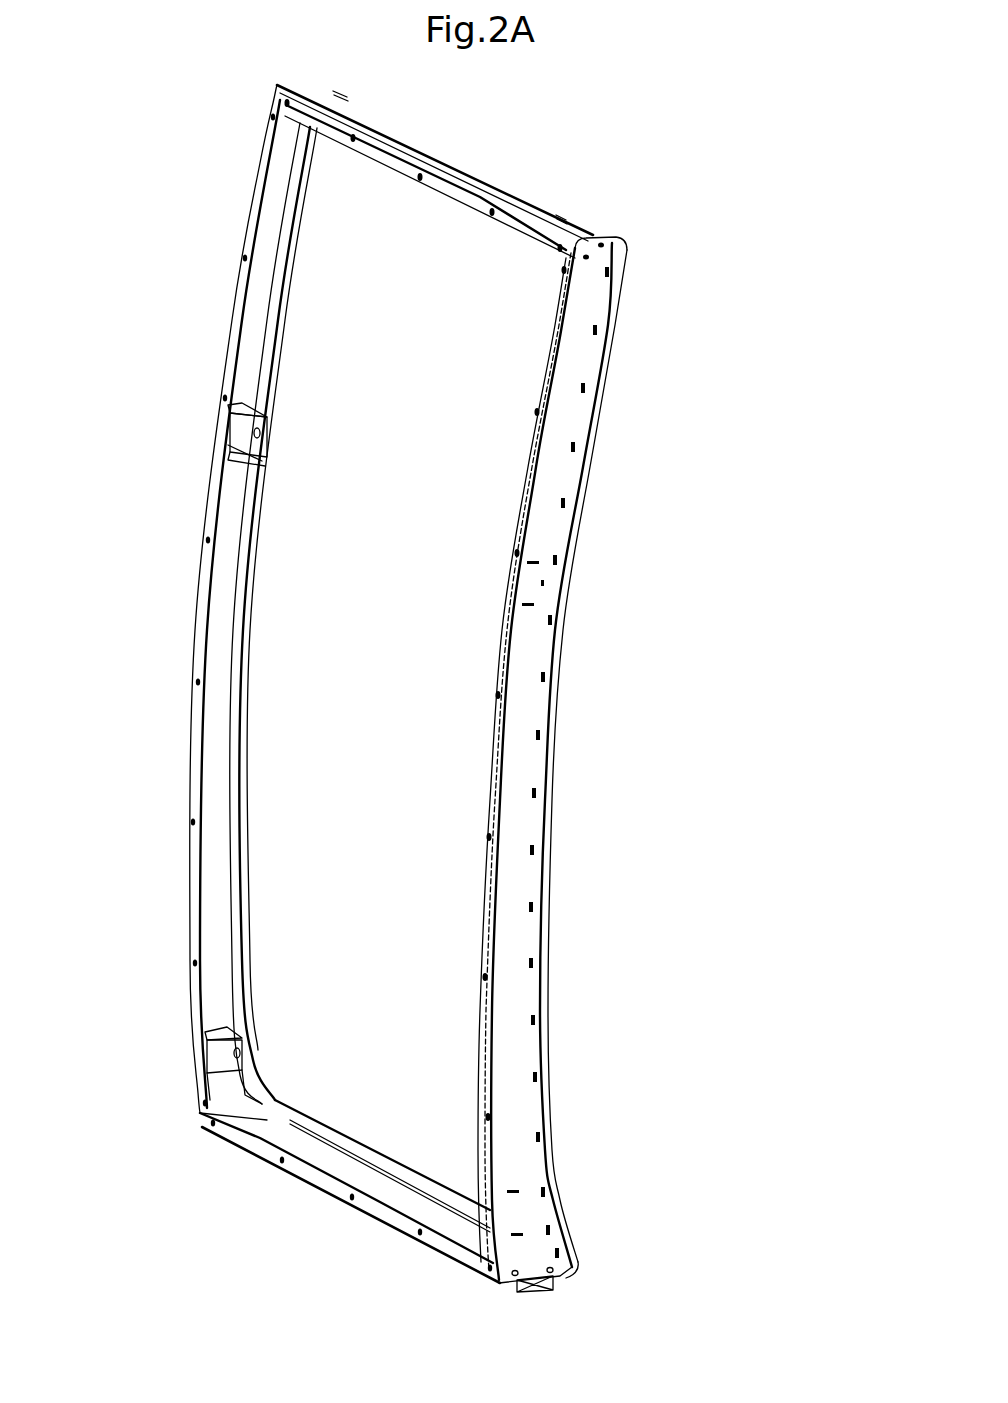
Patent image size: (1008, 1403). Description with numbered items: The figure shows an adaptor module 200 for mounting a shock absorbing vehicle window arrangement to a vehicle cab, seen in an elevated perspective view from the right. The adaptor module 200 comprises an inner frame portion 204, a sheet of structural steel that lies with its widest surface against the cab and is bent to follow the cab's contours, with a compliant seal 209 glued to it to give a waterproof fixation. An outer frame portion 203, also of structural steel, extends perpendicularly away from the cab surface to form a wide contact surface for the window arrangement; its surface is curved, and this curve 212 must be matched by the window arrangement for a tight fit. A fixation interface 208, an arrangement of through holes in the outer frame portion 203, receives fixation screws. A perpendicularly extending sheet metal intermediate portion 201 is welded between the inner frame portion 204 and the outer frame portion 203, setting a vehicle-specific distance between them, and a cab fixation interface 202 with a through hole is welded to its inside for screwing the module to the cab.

The adaptor module 200 is at (717, 308).
The sheet metal intermediate portion 201 is at (542, 657).
The cab fixation interface 202 is at (258, 437).
The outer frame portion 203 is at (500, 635).
The inner frame portion 204 is at (547, 718).
The fixation interface 208 is at (558, 249).
The compliant seal 209 is at (582, 463).
The curve 212 is at (203, 613).